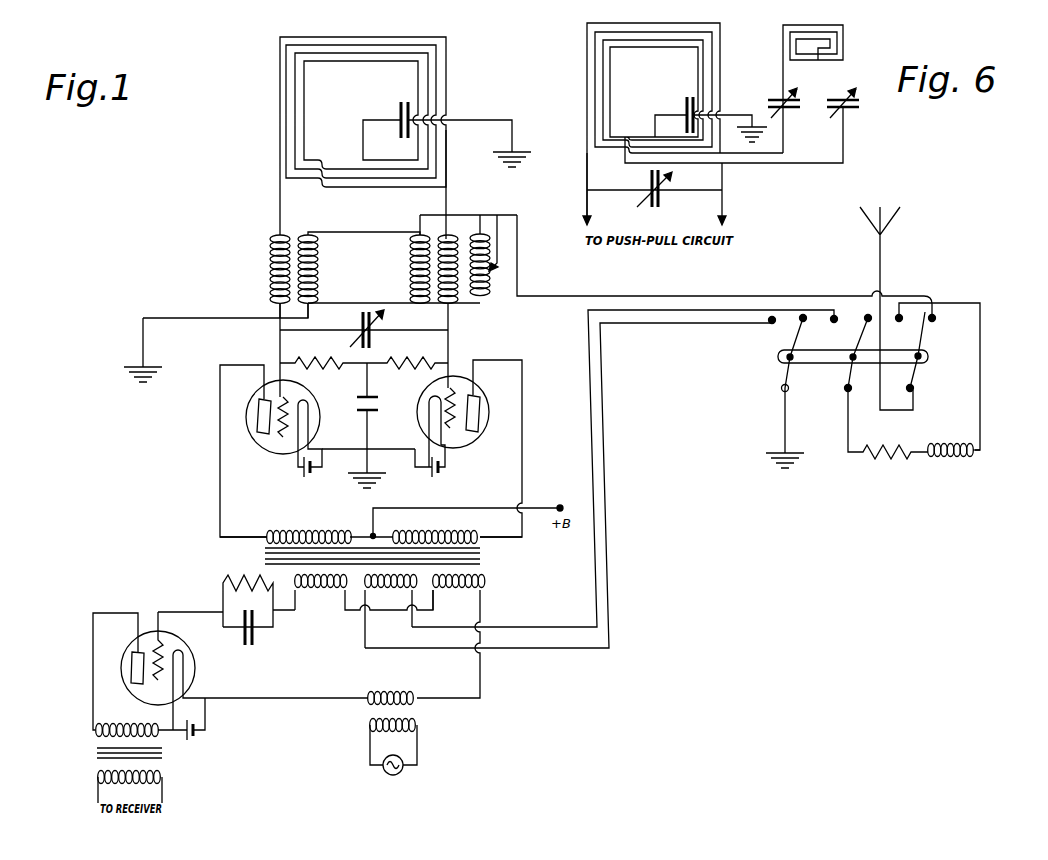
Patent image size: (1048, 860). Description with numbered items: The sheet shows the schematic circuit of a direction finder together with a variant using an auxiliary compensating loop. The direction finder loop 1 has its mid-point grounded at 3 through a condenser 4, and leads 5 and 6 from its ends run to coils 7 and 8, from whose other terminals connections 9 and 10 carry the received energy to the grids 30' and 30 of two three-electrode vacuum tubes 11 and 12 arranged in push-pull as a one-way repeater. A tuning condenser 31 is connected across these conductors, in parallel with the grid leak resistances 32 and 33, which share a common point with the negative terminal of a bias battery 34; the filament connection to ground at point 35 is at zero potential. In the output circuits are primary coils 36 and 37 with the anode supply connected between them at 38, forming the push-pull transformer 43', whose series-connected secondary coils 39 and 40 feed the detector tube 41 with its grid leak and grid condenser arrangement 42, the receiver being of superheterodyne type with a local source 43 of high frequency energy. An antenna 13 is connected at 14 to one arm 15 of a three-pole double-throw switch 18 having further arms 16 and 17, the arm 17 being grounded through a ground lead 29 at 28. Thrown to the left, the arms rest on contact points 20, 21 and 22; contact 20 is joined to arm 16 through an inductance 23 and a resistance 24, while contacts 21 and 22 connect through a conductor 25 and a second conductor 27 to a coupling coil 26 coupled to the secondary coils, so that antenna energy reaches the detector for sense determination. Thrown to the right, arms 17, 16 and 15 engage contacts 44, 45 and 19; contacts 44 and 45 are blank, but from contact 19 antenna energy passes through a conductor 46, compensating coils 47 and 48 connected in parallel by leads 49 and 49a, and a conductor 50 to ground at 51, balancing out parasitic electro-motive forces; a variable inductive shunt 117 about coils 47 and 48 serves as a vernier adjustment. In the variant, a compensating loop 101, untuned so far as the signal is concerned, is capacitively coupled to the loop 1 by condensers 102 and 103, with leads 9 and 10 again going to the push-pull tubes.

In FIG. 6, the direction finder loop 1 is at (722, 33).
In FIG. 1, the ground 3 is at (518, 159).
In FIG. 6, the ground 3 is at (745, 137).
In FIG. 1, the condenser 4 is at (399, 130).
In FIG. 1, the lead 5 is at (448, 172).
In FIG. 1, the lead 6 is at (279, 156).
In FIG. 1, the coil 7 is at (454, 272).
In FIG. 1, the coil 8 is at (272, 271).
In FIG. 1, the connection 9 is at (452, 343).
In FIG. 6, the connection 9 is at (724, 211).
In FIG. 1, the connection 10 is at (281, 352).
In FIG. 6, the connection 10 is at (586, 213).
In FIG. 1, the vacuum tube 11 is at (483, 391).
In FIG. 1, the vacuum tube 12 is at (254, 392).
In FIG. 1, the antenna 13 is at (882, 243).
In FIG. 1, the connection point 14 is at (922, 394).
In FIG. 1, the switch arm 15 is at (911, 372).
In FIG. 1, the switch arm 16 is at (847, 374).
In FIG. 1, the switch arm 17 is at (784, 374).
In FIG. 1, the three-pole double-throw switch 18 is at (928, 357).
In FIG. 1, the contact 19 is at (938, 327).
In FIG. 1, the contact point 20 is at (936, 376).
In FIG. 1, the contact point 21 is at (835, 328).
In FIG. 1, the contact point 22 is at (766, 328).
In FIG. 1, the inductance 23 is at (958, 457).
In FIG. 1, the resistance 24 is at (894, 456).
In FIG. 1, the conductor 25 is at (589, 353).
In FIG. 1, the coupling coil 26 is at (402, 590).
In FIG. 1, the conductor 27 is at (605, 458).
In FIG. 1, the ground 28 is at (793, 471).
In FIG. 1, the lead 29 is at (785, 426).
In FIG. 1, the grid 30 is at (273, 436).
In FIG. 1, the grid 30' is at (469, 427).
In FIG. 1, the tuning condenser 31 is at (367, 336).
In FIG. 6, the tuning condenser 31 is at (664, 207).
In FIG. 1, the grid leak resistance 32 is at (420, 369).
In FIG. 1, the grid leak resistance 33 is at (308, 368).
In FIG. 1, the bias battery 34 is at (380, 403).
In FIG. 1, the filament ground point 35 is at (378, 478).
In FIG. 1, the primary coil 36 is at (478, 531).
In FIG. 1, the primary coil 37 is at (305, 527).
In FIG. 1, the anode supply connection point 38 is at (372, 531).
In FIG. 1, the secondary coil 39 is at (472, 590).
In FIG. 1, the secondary coil 40 is at (335, 590).
In FIG. 1, the detector tube 41 is at (131, 648).
In FIG. 1, the grid leak and grid condenser arrangement 42 is at (249, 647).
In FIG. 1, the local source of high frequency energy 43 is at (396, 759).
In FIG. 1, the push-pull transformer 43' is at (389, 554).
In FIG. 1, the contact 44 is at (805, 327).
In FIG. 1, the contact 45 is at (870, 327).
In FIG. 1, the conductor 46 is at (617, 297).
In FIG. 1, the coil 47 is at (418, 261).
In FIG. 1, the coil 48 is at (319, 289).
In FIG. 1, the lead 49 is at (347, 233).
In FIG. 1, the lead 49a is at (402, 304).
In FIG. 1, the conductor 50 is at (250, 318).
In FIG. 1, the ground 51 is at (151, 382).
In FIG. 6, the compensating loop 101 is at (848, 30).
In FIG. 6, the condenser 102 is at (852, 111).
In FIG. 6, the condenser 103 is at (770, 101).
In FIG. 1, the variable inductive shunt 117 is at (485, 303).